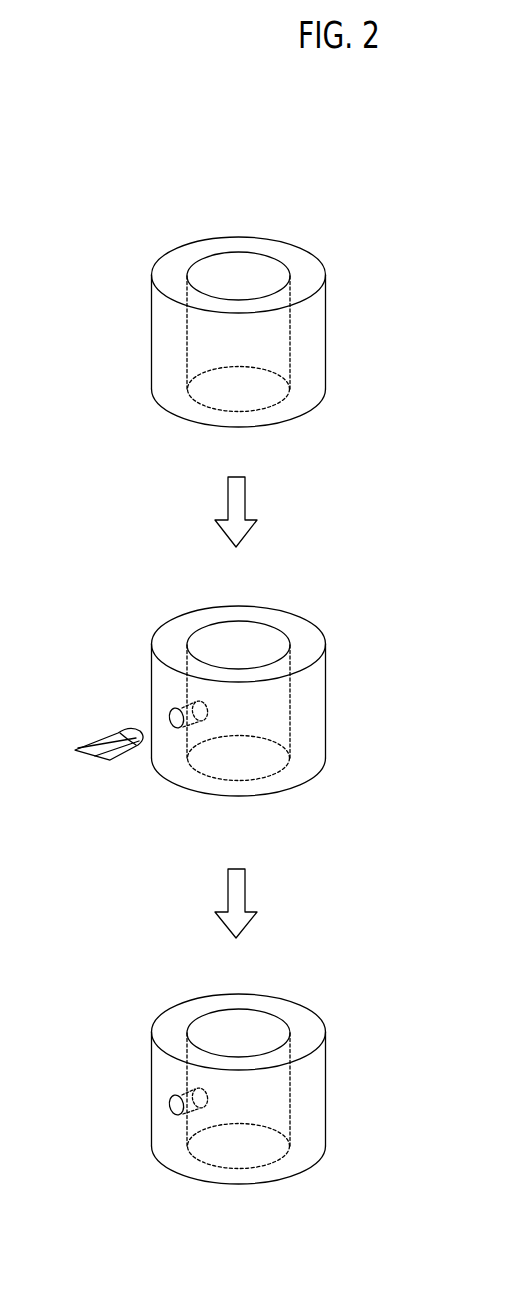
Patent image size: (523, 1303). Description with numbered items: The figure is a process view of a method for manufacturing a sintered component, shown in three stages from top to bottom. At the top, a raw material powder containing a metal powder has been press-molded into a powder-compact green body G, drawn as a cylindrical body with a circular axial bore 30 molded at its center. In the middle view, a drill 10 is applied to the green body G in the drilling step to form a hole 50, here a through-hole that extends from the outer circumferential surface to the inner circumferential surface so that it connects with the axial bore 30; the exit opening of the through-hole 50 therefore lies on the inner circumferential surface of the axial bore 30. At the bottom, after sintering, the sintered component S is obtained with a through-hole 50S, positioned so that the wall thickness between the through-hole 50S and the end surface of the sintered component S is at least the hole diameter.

The axial bore 30 is at (200, 270).
The powder-compact green body G is at (333, 292).
The through-hole 50 is at (170, 717).
The drill 10 is at (103, 733).
The through-hole 50S is at (170, 1104).
The sintered component S is at (330, 1052).